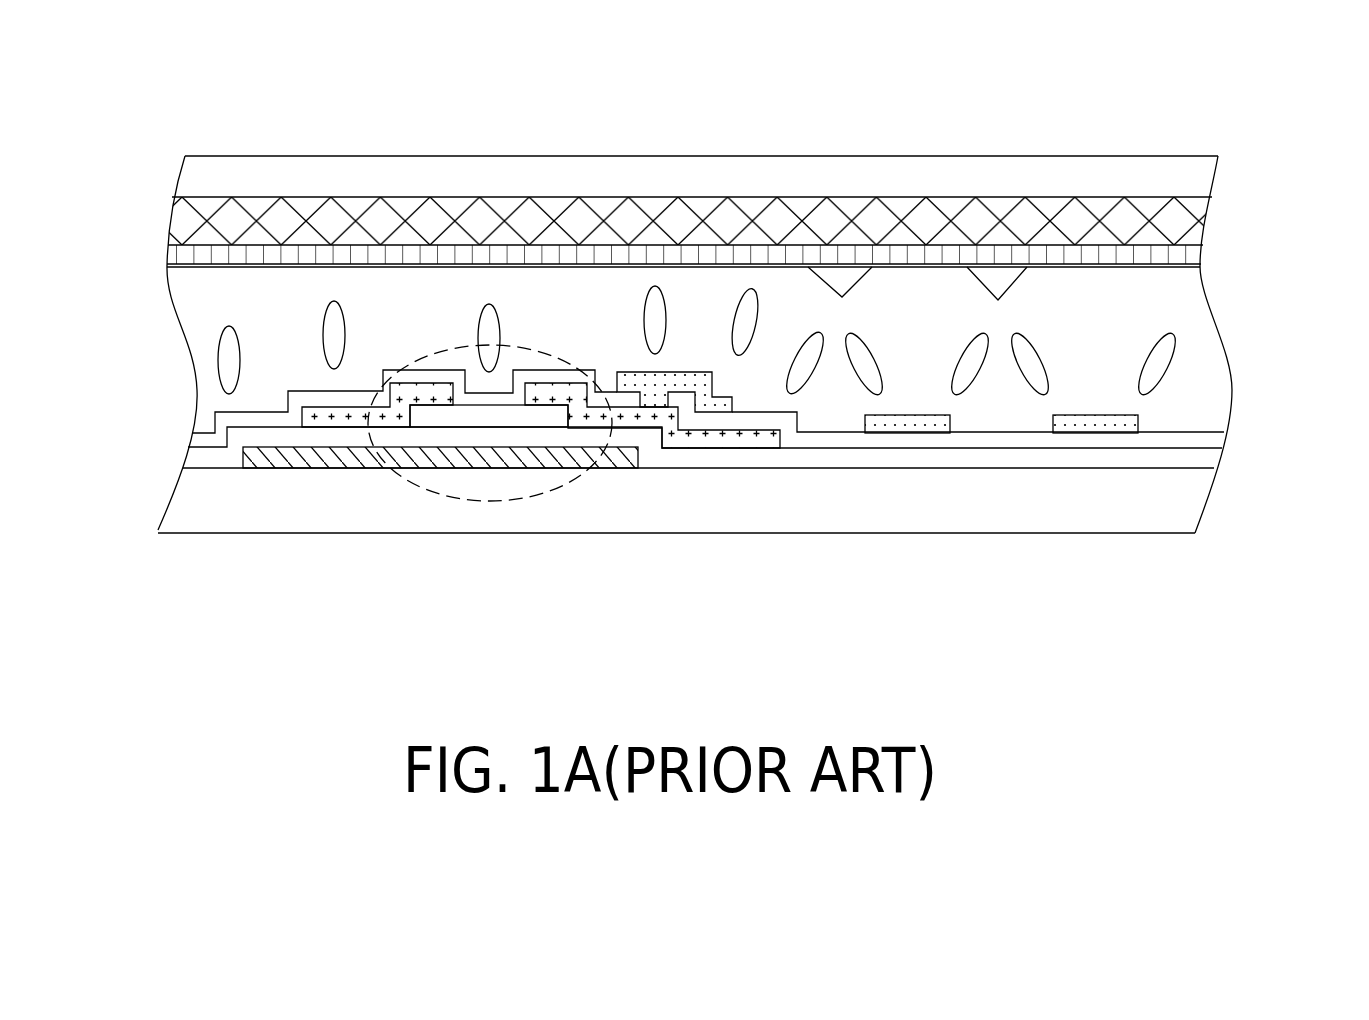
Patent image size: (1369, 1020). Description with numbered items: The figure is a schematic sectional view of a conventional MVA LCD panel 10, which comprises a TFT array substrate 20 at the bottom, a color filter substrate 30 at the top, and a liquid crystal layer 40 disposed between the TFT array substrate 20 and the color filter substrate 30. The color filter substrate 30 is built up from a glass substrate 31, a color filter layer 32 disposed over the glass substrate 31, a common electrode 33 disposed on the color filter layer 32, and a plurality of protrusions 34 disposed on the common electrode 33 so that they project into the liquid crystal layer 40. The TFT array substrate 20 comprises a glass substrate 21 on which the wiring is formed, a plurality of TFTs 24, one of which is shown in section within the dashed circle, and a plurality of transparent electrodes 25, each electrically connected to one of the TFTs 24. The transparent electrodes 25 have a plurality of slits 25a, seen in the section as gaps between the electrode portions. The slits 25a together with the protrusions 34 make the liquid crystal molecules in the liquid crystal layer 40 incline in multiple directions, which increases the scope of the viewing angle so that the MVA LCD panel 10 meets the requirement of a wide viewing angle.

The MVA LCD panel 10 is at (1316, 603).
The TFT array substrate 20 is at (178, 443).
The glass substrate 21 is at (312, 515).
The TFT 24 is at (573, 482).
The transparent electrode 25 is at (1122, 428).
The slit 25a is at (952, 423).
The color filter substrate 30 is at (98, 95).
The glass substrate 31 is at (205, 175).
The color filter layer 32 is at (193, 222).
The common electrode 33 is at (192, 257).
The protrusion 34 is at (847, 278).
The liquid crystal layer 40 is at (212, 302).